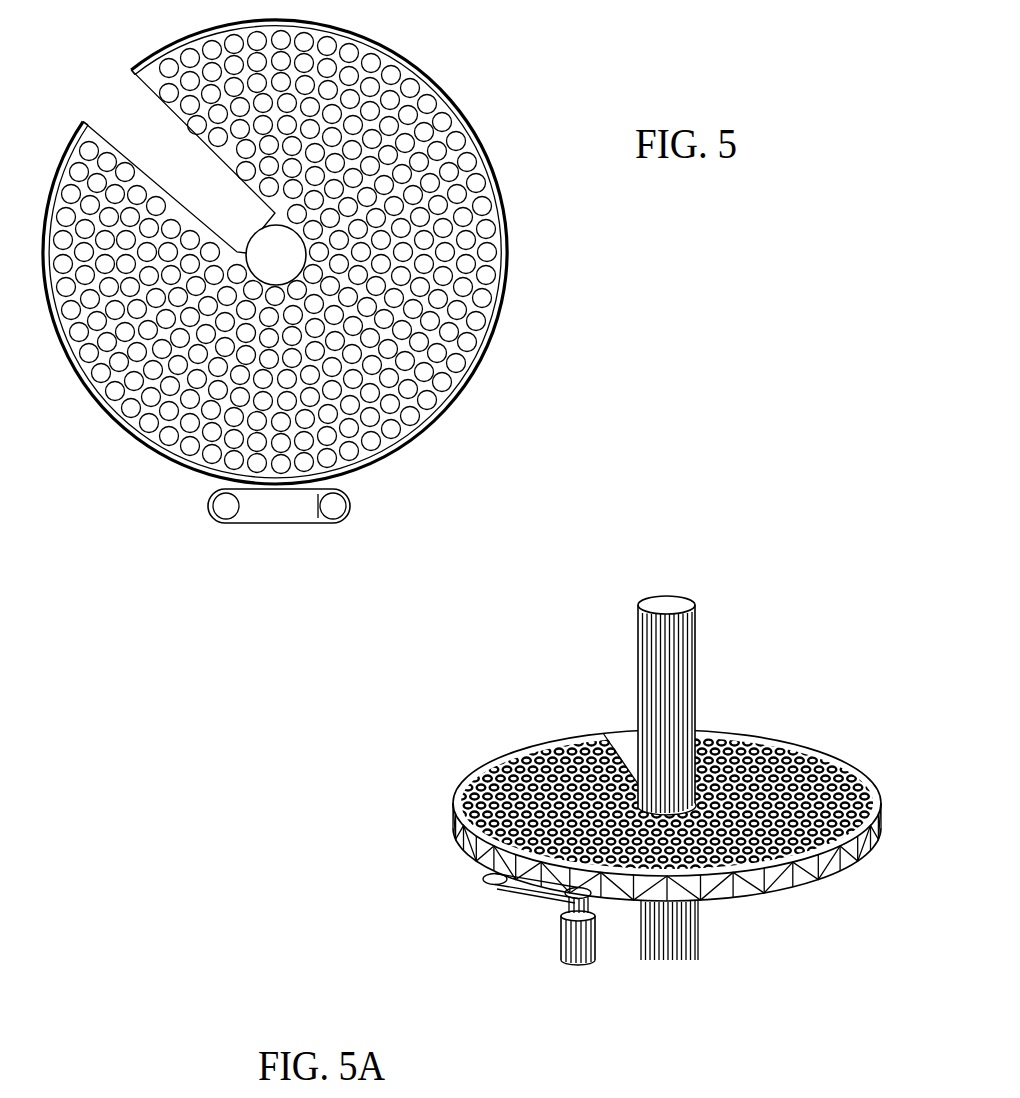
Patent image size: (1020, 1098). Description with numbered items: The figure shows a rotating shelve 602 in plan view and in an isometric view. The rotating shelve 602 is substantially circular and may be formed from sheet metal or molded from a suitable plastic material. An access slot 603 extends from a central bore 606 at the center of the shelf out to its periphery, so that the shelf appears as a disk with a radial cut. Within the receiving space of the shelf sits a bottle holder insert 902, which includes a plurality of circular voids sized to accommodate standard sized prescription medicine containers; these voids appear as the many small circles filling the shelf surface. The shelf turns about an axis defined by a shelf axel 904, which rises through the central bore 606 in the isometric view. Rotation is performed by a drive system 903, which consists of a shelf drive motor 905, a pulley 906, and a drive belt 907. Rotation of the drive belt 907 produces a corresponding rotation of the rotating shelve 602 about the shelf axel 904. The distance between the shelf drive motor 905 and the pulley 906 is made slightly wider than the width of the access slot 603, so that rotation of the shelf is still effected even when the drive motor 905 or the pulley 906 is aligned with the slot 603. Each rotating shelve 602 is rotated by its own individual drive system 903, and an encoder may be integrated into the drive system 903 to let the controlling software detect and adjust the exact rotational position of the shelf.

In FIG. 5A, the rotating shelve 602 is at (457, 822).
In FIG. 5, the access slot 603 is at (180, 172).
In FIG. 5, the central bore 606 is at (280, 255).
In FIG. 5, the bottle holder insert 902 is at (210, 413).
In FIG. 5, the drive system 903 is at (318, 494).
In FIG. 5A, the shelf axel 904 is at (693, 698).
In FIG. 5A, the shelf drive motor 905 is at (597, 937).
In FIG. 5A, the pulley 906 is at (483, 885).
In FIG. 5A, the drive belt 907 is at (520, 903).